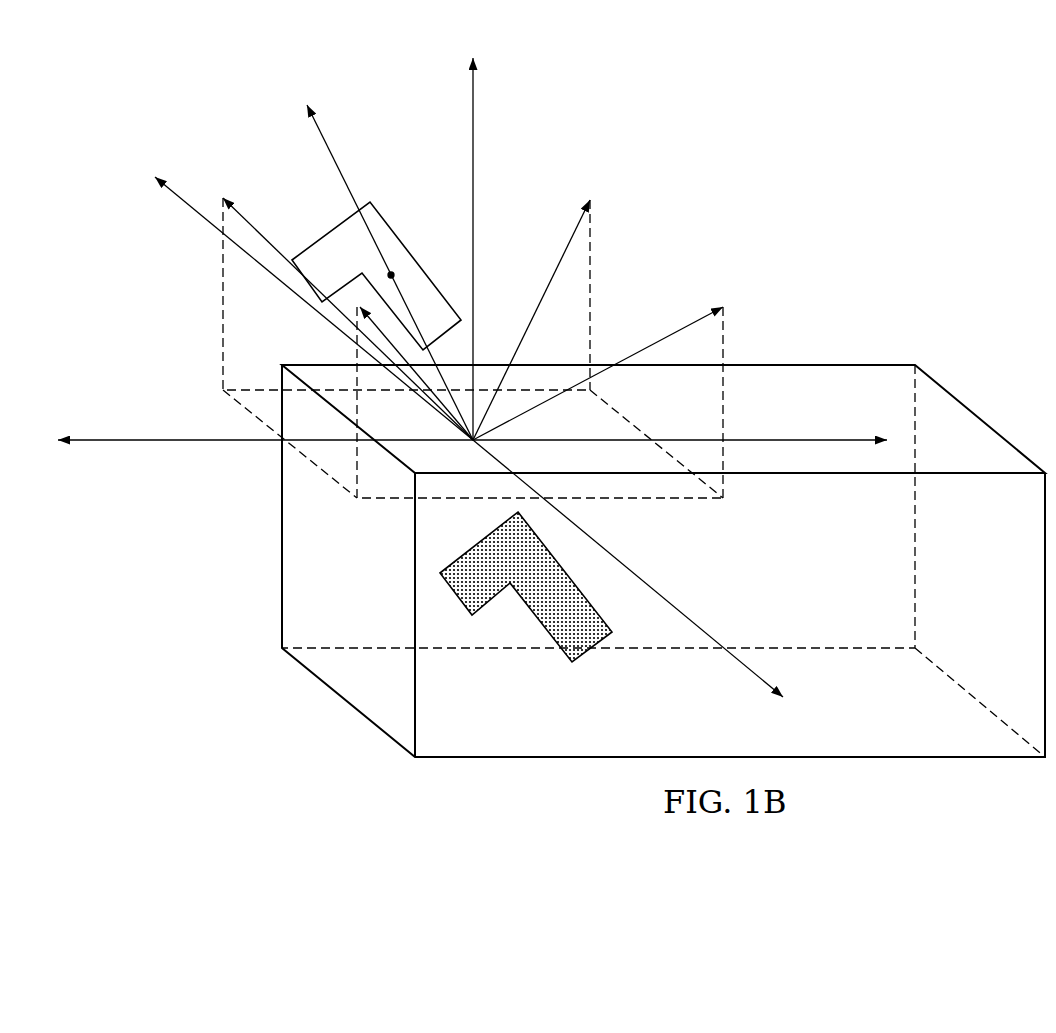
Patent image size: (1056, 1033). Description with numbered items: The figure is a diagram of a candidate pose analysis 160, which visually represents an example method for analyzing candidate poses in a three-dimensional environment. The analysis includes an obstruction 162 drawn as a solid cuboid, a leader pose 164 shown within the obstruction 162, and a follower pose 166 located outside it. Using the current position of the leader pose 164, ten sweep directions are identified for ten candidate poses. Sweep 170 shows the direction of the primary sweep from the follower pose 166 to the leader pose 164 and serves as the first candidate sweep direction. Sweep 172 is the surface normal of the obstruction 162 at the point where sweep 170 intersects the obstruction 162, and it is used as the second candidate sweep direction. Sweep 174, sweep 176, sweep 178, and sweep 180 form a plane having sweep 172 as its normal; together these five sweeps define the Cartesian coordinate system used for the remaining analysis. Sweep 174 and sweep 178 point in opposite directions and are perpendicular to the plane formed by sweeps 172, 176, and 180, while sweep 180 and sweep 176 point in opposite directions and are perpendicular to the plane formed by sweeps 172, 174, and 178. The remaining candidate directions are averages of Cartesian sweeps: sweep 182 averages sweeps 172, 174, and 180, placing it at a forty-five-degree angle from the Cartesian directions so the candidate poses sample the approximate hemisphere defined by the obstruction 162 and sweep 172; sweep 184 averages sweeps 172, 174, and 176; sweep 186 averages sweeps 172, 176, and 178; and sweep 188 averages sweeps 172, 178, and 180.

The candidate pose analysis 160 is at (790, 155).
The obstruction 162 is at (347, 707).
The leader pose 164 is at (590, 647).
The follower pose 166 is at (397, 237).
The sweep 170 is at (328, 147).
The sweep 172 is at (473, 135).
The sweep 174 is at (788, 440).
The sweep 176 is at (750, 675).
The sweep 178 is at (157, 442).
The sweep 180 is at (188, 208).
The sweep 182 is at (560, 252).
The sweep 184 is at (677, 330).
The sweep 186 is at (357, 350).
The sweep 188 is at (258, 228).